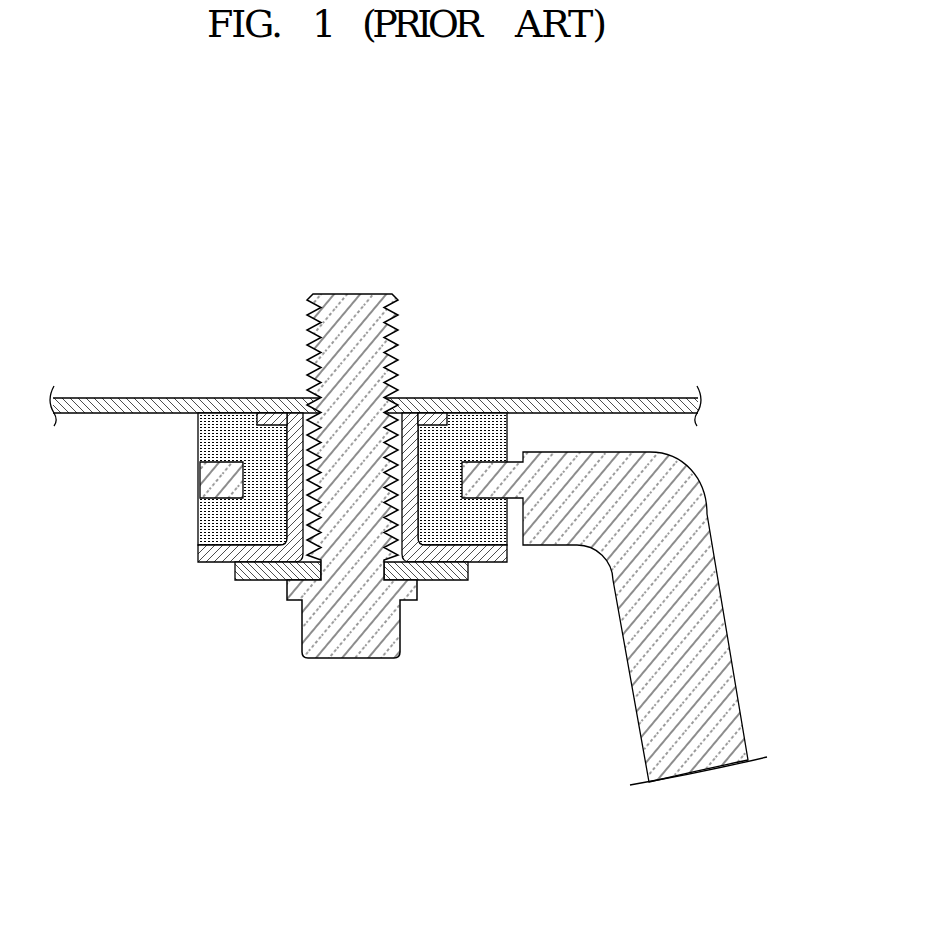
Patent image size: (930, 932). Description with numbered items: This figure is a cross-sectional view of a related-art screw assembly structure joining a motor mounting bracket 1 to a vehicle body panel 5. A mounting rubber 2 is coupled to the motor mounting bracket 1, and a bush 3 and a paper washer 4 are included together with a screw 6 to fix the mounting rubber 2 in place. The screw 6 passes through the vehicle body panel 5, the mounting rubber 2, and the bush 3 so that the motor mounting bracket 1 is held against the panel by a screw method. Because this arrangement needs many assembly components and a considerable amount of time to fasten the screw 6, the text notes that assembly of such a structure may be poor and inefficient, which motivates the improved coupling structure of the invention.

The motor mounting bracket 1 is at (717, 690).
The mounting rubber 2 is at (477, 527).
The bush 3 is at (420, 517).
The paper washer 4 is at (273, 423).
The vehicle body panel 5 is at (621, 406).
The screw 6 is at (355, 305).